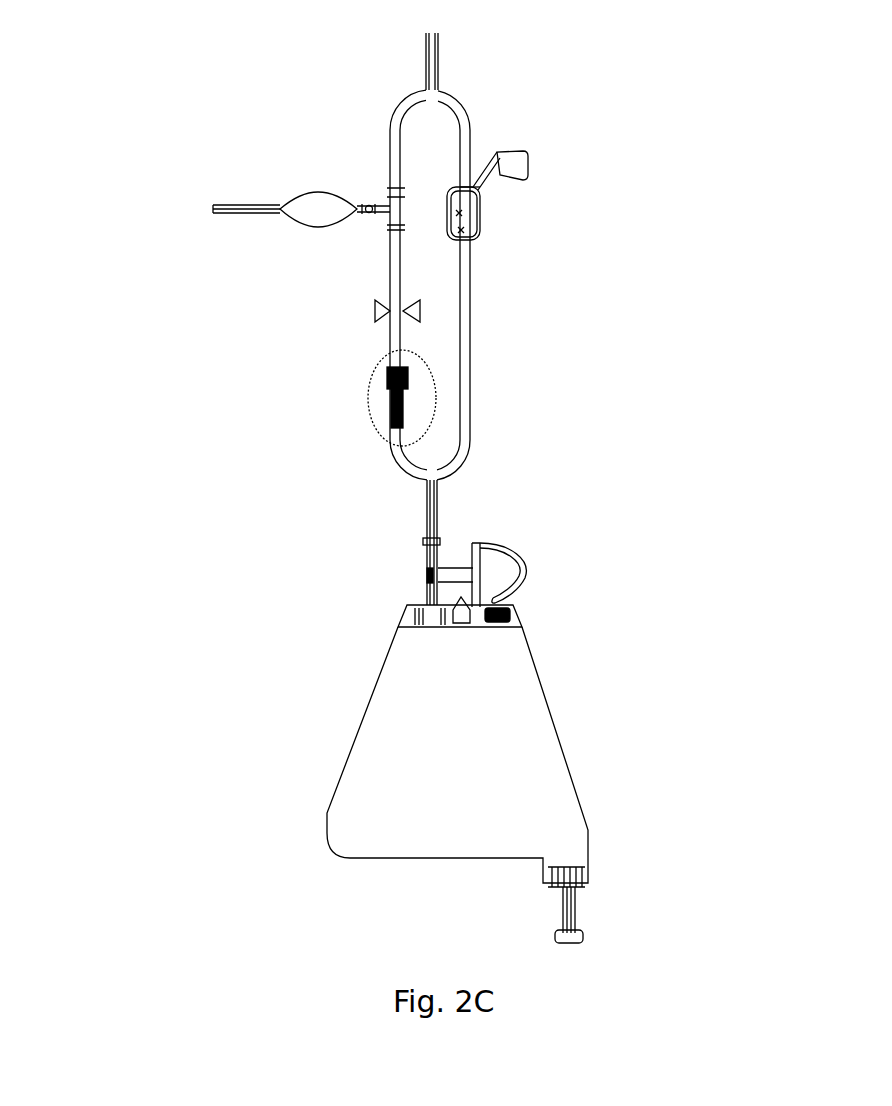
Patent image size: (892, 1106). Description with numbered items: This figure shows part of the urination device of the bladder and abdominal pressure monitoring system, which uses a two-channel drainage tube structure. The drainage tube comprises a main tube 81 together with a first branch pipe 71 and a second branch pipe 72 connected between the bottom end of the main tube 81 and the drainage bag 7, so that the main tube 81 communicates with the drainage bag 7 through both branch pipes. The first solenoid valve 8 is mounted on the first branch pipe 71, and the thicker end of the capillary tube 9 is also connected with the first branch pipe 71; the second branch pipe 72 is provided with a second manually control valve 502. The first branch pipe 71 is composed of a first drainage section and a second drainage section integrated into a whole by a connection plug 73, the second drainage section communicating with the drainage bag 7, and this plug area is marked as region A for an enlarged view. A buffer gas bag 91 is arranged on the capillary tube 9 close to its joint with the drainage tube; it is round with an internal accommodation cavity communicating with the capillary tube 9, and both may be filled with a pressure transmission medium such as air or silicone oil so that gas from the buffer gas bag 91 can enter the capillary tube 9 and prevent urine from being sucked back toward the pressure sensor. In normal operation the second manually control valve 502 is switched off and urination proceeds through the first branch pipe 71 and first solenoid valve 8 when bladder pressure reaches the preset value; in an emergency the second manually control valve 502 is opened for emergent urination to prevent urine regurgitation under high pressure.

The main tube 81 is at (433, 57).
The second branch pipe 72 is at (463, 377).
The second manually control valve 502 is at (483, 167).
The capillary tube 9 is at (237, 207).
The buffer gas bag 91 is at (308, 200).
The first solenoid valve 8 is at (388, 312).
The first branch pipe 71 is at (390, 335).
The connection plug 73 is at (390, 367).
The enlarged region A is at (437, 403).
The drainage bag 7 is at (518, 760).